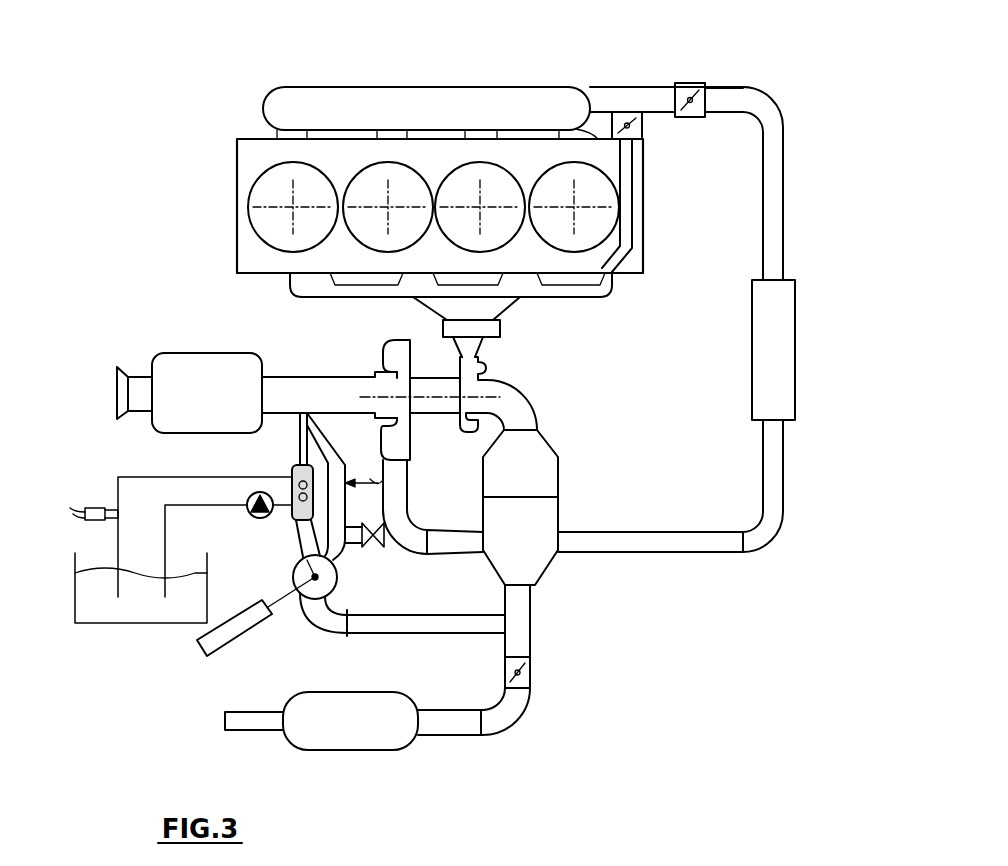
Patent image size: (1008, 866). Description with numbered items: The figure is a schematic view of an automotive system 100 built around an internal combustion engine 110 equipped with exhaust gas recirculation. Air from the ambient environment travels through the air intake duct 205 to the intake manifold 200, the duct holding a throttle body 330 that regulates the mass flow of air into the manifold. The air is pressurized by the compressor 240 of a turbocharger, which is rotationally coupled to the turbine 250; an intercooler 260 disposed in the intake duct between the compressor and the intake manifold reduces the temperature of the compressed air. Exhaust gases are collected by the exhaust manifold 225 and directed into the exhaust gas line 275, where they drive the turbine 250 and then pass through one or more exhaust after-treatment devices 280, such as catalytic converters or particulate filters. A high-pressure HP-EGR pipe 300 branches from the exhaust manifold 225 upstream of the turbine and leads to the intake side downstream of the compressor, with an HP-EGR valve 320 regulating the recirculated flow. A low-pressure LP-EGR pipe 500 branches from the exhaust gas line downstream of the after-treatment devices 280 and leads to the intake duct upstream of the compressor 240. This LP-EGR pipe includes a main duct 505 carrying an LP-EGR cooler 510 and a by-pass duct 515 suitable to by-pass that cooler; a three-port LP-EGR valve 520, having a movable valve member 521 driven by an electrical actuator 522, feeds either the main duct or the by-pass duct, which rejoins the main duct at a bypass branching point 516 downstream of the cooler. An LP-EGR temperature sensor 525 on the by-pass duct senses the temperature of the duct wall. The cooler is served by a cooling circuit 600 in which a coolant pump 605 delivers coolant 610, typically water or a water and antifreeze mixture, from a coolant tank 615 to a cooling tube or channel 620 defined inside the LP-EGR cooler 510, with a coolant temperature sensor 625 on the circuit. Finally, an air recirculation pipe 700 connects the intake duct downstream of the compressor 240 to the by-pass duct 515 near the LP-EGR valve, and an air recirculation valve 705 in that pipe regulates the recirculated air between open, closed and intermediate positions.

The automotive system 100 is at (138, 133).
The internal combustion engine 110 is at (237, 138).
The intake manifold 200 is at (455, 103).
The air intake duct 205 is at (131, 378).
The exhaust manifold 225 is at (578, 296).
The compressor 240 is at (386, 350).
The turbine 250 is at (484, 380).
The intercooler 260 is at (797, 366).
The exhaust gas line 275 is at (508, 713).
The exhaust after-treatment device 280 is at (538, 483).
The HP-EGR pipe 300 is at (640, 232).
The HP-EGR valve 320 is at (628, 120).
The throttle body 330 is at (697, 96).
The LP-EGR pipe 500 is at (487, 627).
The main duct 505 is at (302, 533).
The LP-EGR cooler 510 is at (290, 470).
The by-pass duct 515 is at (330, 550).
The bypass branching point 516 is at (305, 440).
The LP-EGR valve 520 is at (300, 591).
The movable valve member 521 is at (333, 562).
The electrical actuator 522 is at (240, 637).
The LP-EGR temperature sensor 525 is at (360, 482).
The cooling circuit 600 is at (100, 466).
The coolant pump 605 is at (250, 513).
The coolant 610 is at (115, 602).
The coolant tank 615 is at (137, 625).
The cooling tube or channel 620 is at (185, 477).
The coolant temperature sensor 625 is at (86, 506).
The air recirculation pipe 700 is at (390, 530).
The air recirculation valve 705 is at (390, 553).